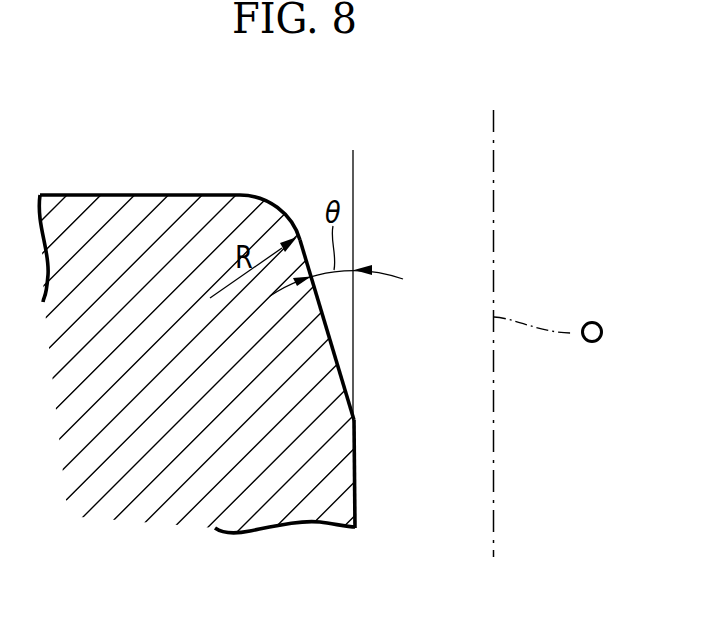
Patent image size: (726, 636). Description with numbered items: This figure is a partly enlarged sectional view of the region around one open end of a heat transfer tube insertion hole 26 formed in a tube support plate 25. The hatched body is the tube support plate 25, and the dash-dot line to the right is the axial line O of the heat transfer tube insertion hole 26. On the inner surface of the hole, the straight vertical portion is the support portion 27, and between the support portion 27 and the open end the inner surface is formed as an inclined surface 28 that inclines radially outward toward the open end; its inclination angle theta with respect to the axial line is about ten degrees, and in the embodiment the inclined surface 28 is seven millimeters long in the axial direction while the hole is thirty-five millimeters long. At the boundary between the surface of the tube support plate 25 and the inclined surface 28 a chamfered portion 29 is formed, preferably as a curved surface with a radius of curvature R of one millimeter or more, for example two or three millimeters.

The tube support plate 25 is at (128, 195).
The heat transfer tube insertion hole 26 is at (548, 206).
The support portion 27 is at (356, 475).
The inclined surface 28 is at (355, 341).
The chamfered portion 29 is at (280, 204).